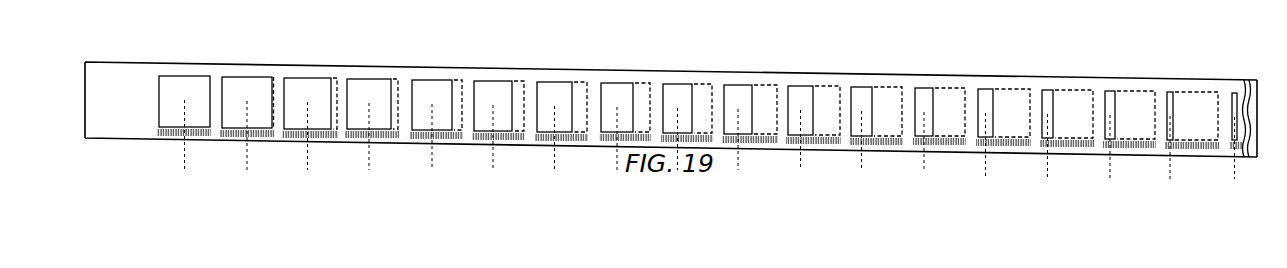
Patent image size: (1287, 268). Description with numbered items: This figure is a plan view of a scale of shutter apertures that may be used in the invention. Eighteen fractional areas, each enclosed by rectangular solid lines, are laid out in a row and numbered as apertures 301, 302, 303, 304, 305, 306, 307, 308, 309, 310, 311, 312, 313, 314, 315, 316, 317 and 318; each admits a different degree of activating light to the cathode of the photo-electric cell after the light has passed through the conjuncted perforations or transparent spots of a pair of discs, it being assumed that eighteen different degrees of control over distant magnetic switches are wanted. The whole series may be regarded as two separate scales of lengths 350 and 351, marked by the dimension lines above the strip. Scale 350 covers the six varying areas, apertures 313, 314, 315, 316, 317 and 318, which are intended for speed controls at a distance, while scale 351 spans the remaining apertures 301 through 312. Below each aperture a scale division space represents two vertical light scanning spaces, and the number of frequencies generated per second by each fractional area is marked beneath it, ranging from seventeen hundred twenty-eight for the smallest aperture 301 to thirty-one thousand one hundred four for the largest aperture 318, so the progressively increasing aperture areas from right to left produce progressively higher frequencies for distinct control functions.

The shutter aperture 301 is at (1234, 88).
The shutter aperture 302 is at (1170, 87).
The shutter aperture 303 is at (1110, 86).
The shutter aperture 304 is at (1048, 85).
The shutter aperture 305 is at (986, 84).
The shutter aperture 306 is at (924, 83).
The shutter aperture 307 is at (862, 82).
The shutter aperture 308 is at (800, 81).
The shutter aperture 309 is at (738, 80).
The shutter aperture 310 is at (678, 79).
The shutter aperture 311 is at (617, 77).
The shutter aperture 312 is at (554, 76).
The shutter aperture 313 is at (493, 75).
The shutter aperture 314 is at (432, 74).
The shutter aperture 315 is at (369, 73).
The shutter aperture 316 is at (308, 72).
The shutter aperture 317 is at (247, 71).
The shutter aperture 318 is at (184, 70).
The scale 350 is at (154, 60).
The scale 351 is at (533, 45).